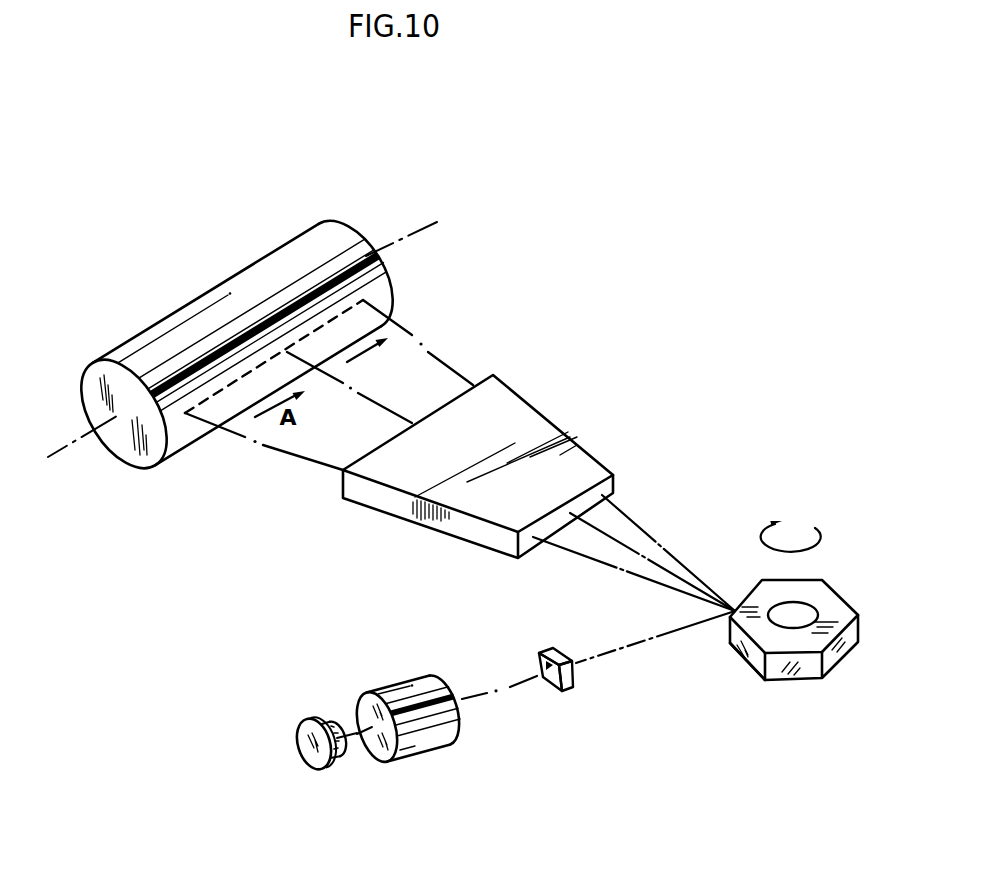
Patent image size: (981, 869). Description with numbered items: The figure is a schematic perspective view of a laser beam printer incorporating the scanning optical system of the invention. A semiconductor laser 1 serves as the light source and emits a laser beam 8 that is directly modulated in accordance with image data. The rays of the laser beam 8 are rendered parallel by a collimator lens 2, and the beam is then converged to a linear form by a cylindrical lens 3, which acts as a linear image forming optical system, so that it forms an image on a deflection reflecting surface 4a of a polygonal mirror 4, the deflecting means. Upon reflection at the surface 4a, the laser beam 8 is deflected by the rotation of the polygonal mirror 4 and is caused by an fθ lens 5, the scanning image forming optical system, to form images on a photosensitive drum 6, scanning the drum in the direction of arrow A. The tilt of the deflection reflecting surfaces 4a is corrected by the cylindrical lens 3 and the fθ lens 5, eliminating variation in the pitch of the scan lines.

The semiconductor laser 1 is at (313, 763).
The collimator lens 2 is at (438, 733).
The cylindrical lens 3 is at (555, 690).
The polygonal mirror 4 is at (825, 602).
The deflection reflecting surface 4a is at (745, 657).
The fθ lens 5 is at (543, 435).
The photosensitive drum 6 is at (147, 455).
The laser beam 8 is at (518, 677).